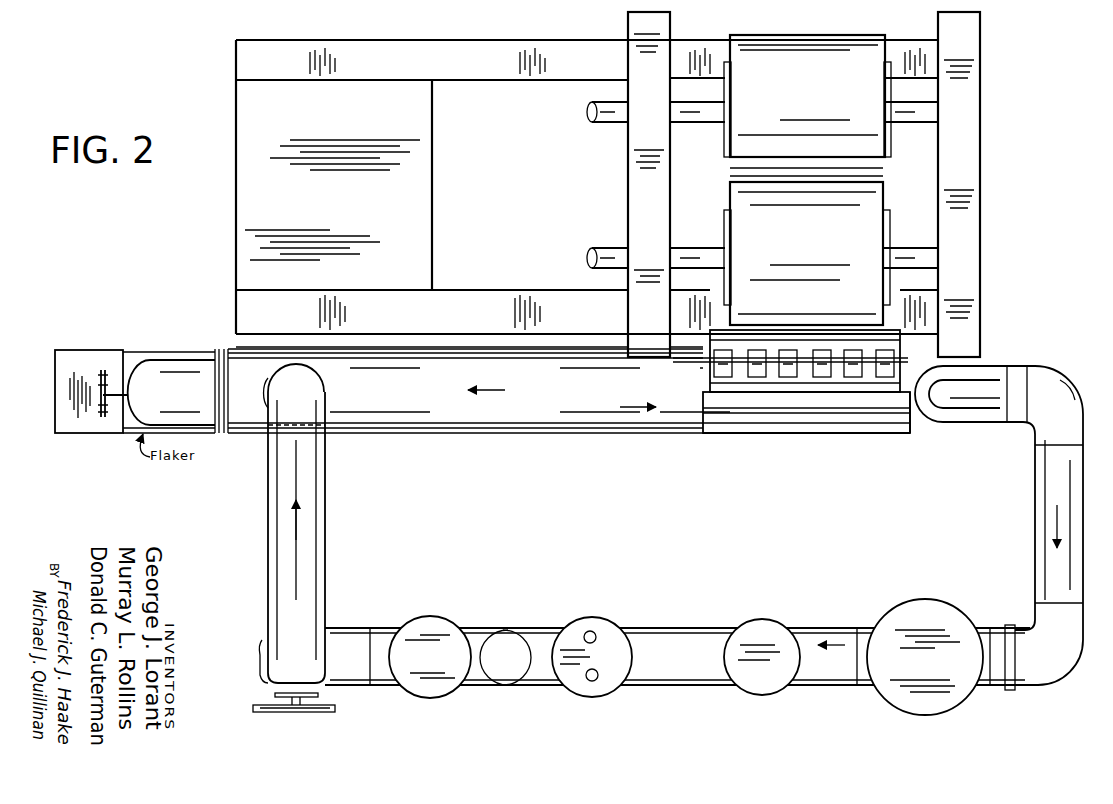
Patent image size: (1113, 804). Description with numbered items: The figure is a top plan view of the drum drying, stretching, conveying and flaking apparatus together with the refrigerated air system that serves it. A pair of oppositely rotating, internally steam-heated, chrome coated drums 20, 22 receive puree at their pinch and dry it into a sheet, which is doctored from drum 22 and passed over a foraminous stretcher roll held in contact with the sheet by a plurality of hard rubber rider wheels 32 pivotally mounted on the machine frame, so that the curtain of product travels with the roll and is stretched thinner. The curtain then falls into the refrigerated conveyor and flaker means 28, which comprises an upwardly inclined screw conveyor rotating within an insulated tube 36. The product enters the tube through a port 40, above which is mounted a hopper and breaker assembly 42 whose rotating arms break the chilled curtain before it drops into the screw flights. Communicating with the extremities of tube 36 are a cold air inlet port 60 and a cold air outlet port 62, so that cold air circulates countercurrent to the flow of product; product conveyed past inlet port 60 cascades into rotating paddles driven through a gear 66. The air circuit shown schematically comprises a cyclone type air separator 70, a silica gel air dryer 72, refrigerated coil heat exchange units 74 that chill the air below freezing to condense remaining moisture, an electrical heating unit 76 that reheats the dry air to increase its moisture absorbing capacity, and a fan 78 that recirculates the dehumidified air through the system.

The drum 20 is at (807, 96).
The drum 22 is at (807, 246).
The refrigerated conveyor and flaker means 28 is at (433, 362).
The rider wheels 32 is at (886, 350).
The insulated tube 36 is at (548, 360).
The port 40 is at (702, 382).
The hopper and breaker assembly 42 is at (885, 414).
The cold air inlet port 60 is at (262, 368).
The cold air outlet port 62 is at (952, 395).
The gear 66 is at (100, 380).
The air separator 70 is at (957, 582).
The silica gel air dryer 72 is at (775, 714).
The refrigerated coil heat exchange units 74 is at (589, 632).
The electrical heating unit 76 is at (460, 714).
The fan 78 is at (322, 710).